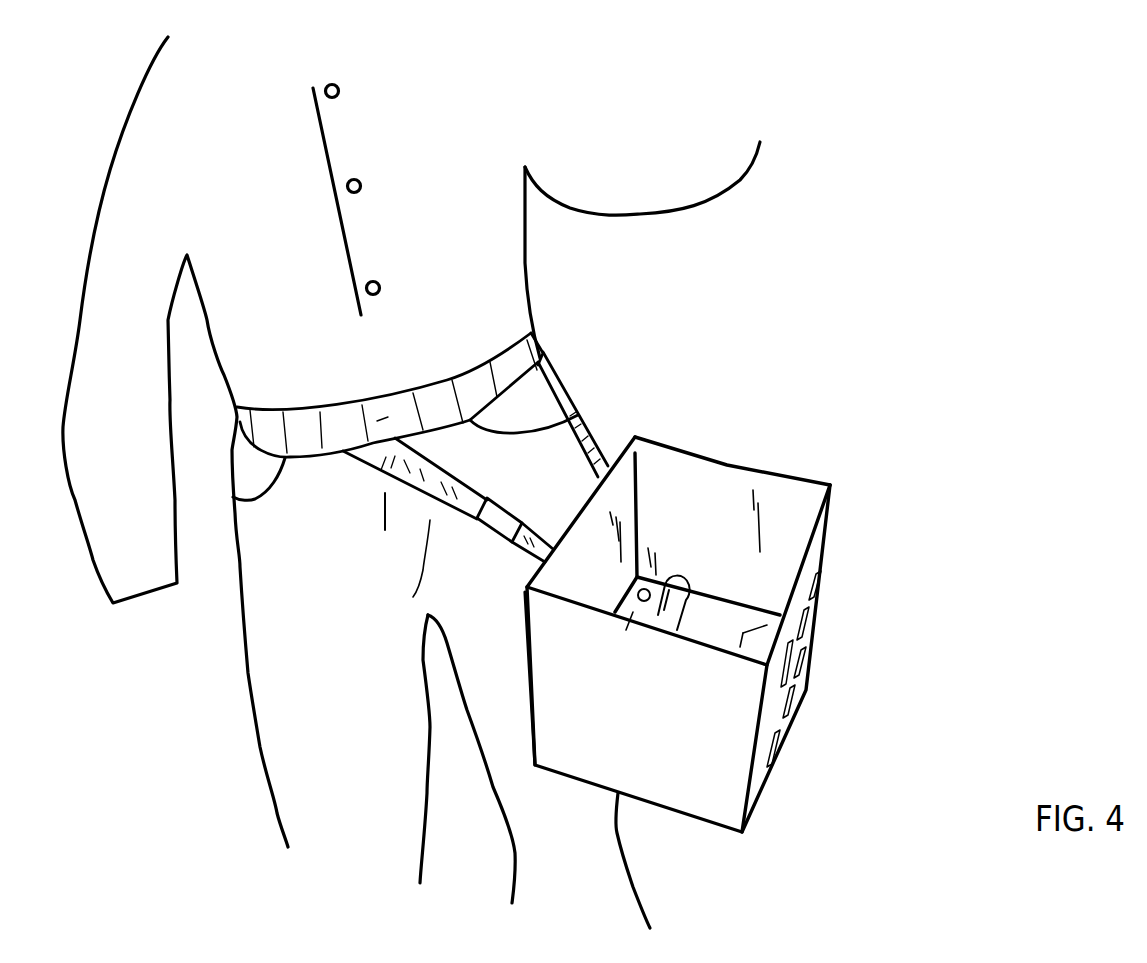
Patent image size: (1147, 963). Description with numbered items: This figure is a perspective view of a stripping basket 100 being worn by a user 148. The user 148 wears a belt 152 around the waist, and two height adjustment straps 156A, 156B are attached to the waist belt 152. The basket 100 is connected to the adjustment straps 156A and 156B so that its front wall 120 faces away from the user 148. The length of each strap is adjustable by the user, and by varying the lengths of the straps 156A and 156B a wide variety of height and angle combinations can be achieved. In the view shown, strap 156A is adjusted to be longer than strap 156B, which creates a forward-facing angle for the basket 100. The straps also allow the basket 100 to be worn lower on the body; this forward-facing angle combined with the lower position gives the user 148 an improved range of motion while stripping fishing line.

The stripping basket 100 is at (678, 609).
The front wall 120 is at (760, 767).
The user 148 is at (507, 293).
The belt 152 is at (373, 410).
The height adjustment strap 156A is at (392, 466).
The height adjustment strap 156B is at (585, 418).